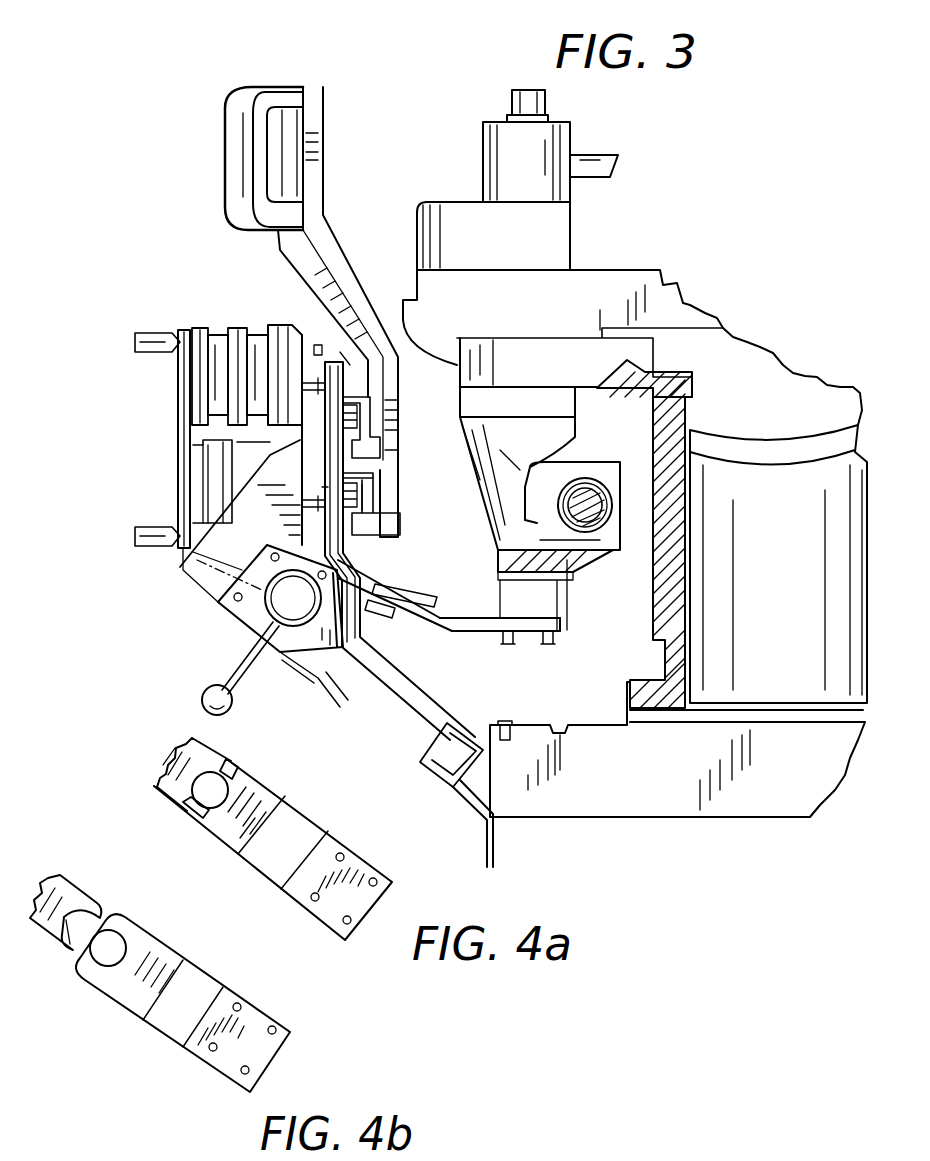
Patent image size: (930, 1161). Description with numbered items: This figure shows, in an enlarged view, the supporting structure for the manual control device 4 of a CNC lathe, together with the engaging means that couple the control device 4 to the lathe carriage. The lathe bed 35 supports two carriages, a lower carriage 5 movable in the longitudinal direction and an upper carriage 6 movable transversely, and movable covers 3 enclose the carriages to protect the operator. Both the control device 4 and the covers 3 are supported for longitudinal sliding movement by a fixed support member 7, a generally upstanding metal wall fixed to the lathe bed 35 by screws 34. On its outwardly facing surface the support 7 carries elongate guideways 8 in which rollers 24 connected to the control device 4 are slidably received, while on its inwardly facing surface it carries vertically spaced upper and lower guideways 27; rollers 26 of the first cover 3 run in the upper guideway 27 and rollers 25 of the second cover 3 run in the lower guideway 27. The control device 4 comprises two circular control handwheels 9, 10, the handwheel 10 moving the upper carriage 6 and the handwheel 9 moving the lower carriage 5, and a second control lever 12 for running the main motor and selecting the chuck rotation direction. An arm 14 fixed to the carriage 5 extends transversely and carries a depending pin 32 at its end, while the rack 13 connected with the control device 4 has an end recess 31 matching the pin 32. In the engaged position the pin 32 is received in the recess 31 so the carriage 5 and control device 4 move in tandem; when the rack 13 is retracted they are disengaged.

In FIG. 3, the movable cover 3 is at (358, 228).
In FIG. 3, the control device 4 is at (280, 325).
In FIG. 3, the lower carriage 5 is at (565, 430).
In FIG. 3, the upper carriage 6 is at (610, 295).
In FIG. 3, the fixed support member 7 is at (340, 352).
In FIG. 3, the guideways 8 is at (317, 345).
In FIG. 3, the control handwheel 9 is at (183, 498).
In FIG. 3, the control handwheel 10 is at (185, 377).
In FIG. 3, the second control lever 12 is at (278, 598).
In FIG. 3, the rack 13 is at (405, 582).
In FIG. 4A, the rack 13 is at (173, 788).
In FIG. 3, the arm 14 is at (482, 630).
In FIG. 4A, the arm 14 is at (233, 845).
In FIG. 3, the rollers 24 is at (308, 392).
In FIG. 3, the rollers 25 is at (382, 503).
In FIG. 3, the rollers 26 is at (350, 400).
In FIG. 3, the guideways 27 is at (378, 437).
In FIG. 4B, the recess 31 is at (80, 900).
In FIG. 4A, the pin 32 is at (215, 783).
In FIG. 4B, the pin 32 is at (112, 947).
In FIG. 3, the screws 34 is at (507, 720).
In FIG. 3, the lathe bed 35 is at (633, 777).